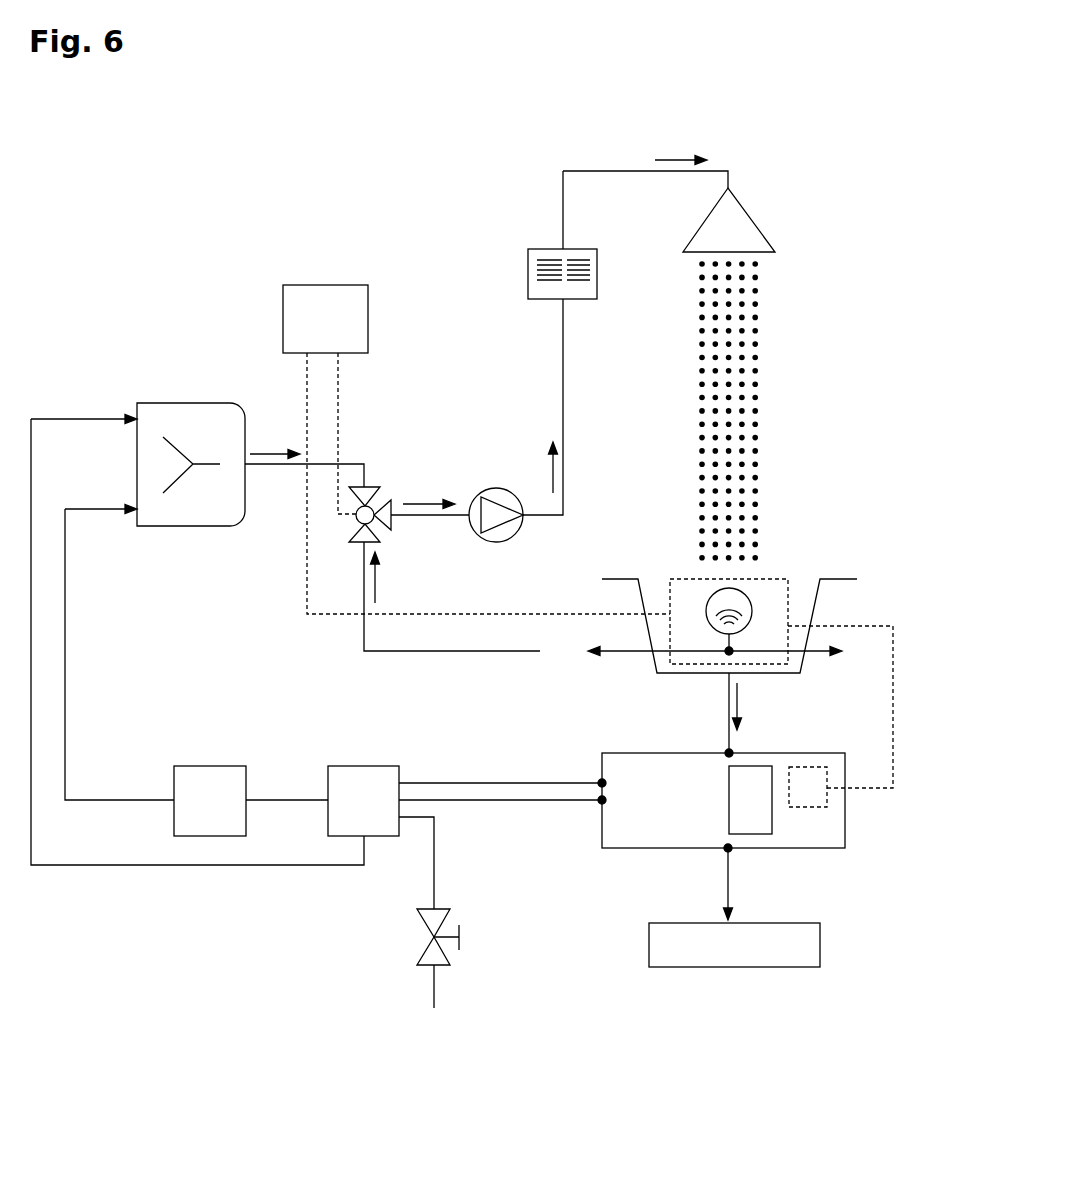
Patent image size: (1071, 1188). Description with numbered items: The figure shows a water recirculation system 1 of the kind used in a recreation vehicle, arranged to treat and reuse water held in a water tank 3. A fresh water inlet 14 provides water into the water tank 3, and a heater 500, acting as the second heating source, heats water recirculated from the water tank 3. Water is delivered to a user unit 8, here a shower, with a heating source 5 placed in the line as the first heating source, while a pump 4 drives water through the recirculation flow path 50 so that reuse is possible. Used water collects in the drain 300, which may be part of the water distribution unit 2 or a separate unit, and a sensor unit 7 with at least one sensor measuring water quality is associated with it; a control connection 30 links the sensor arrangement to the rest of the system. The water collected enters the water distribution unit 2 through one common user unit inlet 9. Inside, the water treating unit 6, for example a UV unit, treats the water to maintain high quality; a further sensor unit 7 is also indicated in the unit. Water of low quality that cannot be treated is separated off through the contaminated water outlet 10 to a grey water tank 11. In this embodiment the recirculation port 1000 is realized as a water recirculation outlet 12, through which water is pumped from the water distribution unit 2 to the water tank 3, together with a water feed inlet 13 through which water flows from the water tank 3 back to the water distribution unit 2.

The water recirculation system 1 is at (240, 194).
The water distribution unit 2 is at (665, 753).
The water tank 3 is at (373, 766).
The pump 4 is at (493, 488).
The heating source 5 is at (528, 278).
The water treating unit 6 is at (752, 766).
The sensor unit 7 is at (788, 579).
The user unit 8 is at (787, 151).
The common user unit inlet 9 is at (725, 752).
The contaminated water outlet 10 is at (718, 848).
The grey water tank 11 is at (775, 923).
The water recirculation outlet 12 is at (600, 783).
The water feed inlet 13 is at (600, 800).
The fresh water inlet 14 is at (434, 985).
The control signal line 30 is at (729, 651).
The recirculation flow path 50 is at (595, 574).
The drain 300 is at (843, 579).
The heater 500 is at (222, 766).
The recirculation port 1000 is at (502, 757).